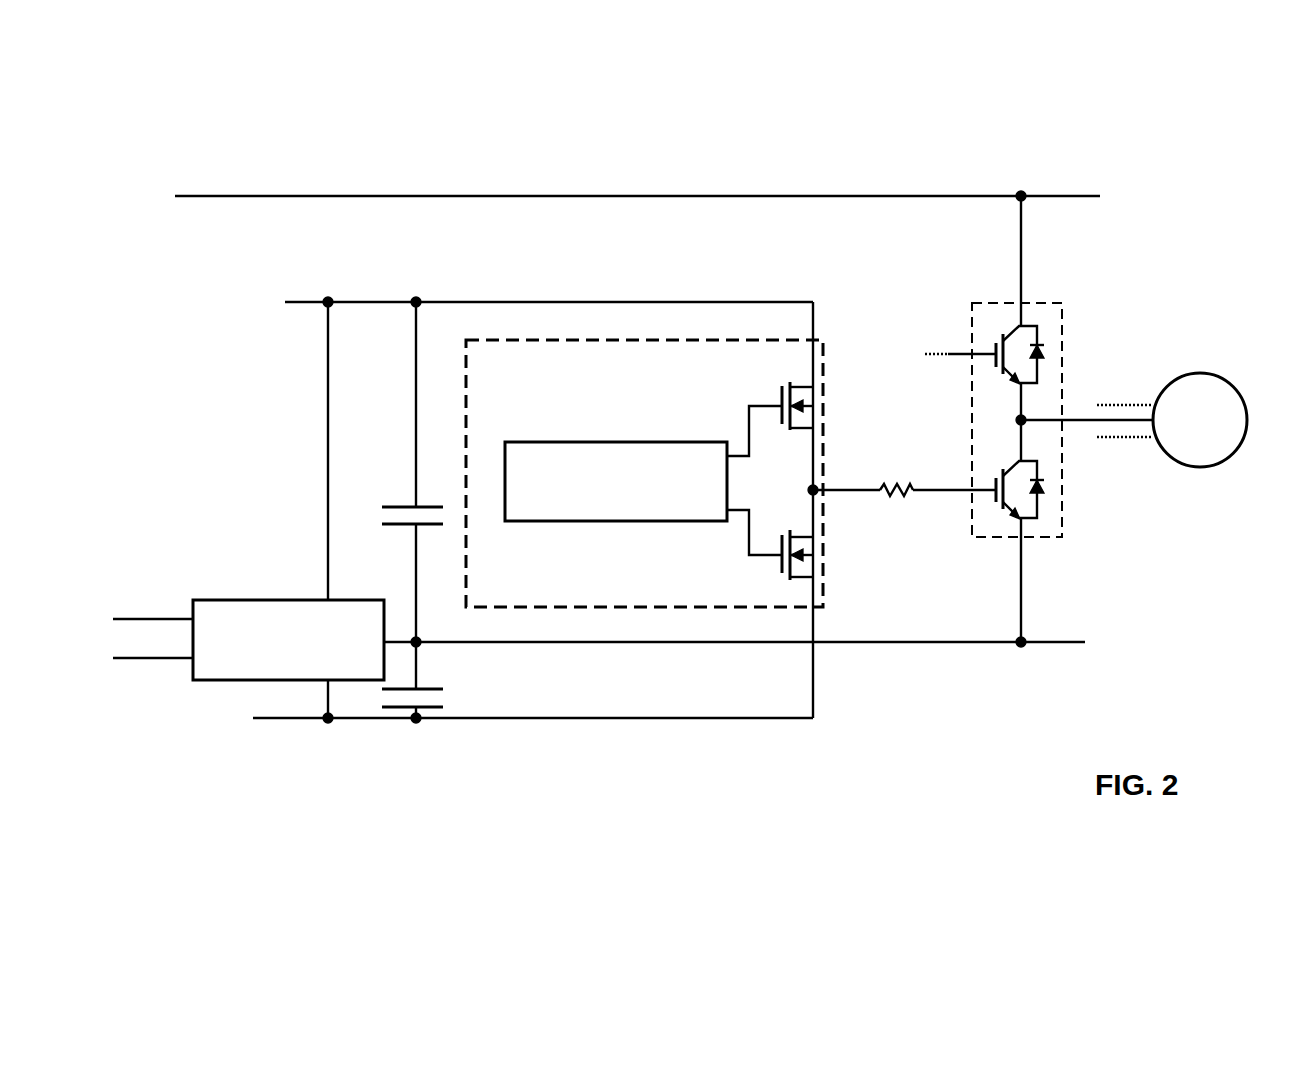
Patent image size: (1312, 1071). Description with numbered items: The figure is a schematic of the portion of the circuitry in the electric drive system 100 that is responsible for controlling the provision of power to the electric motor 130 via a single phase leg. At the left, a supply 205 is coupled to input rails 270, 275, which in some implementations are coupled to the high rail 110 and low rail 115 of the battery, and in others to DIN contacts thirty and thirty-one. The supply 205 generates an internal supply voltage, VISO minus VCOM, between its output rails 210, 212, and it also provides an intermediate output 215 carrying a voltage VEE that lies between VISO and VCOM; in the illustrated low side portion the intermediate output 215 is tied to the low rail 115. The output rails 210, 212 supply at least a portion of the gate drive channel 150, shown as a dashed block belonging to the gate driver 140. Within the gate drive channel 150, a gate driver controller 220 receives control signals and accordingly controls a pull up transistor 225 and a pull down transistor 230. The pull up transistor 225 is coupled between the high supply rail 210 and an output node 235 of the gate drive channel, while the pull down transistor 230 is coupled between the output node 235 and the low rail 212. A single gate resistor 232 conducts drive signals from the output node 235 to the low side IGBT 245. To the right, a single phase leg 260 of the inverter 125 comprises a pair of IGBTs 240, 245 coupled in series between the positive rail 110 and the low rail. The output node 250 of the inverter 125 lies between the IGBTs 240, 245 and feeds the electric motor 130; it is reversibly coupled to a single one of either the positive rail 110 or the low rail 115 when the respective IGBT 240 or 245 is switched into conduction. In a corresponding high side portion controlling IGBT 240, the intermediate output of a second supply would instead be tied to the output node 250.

The electric drive system 100 is at (1165, 264).
The high rail 110 is at (885, 194).
The low rail 115 is at (972, 645).
The inverter 125 is at (971, 396).
The electric motor 130 is at (1241, 395).
The gate driver 140 is at (841, 354).
The gate drive channel 150 is at (540, 407).
The supply 205 is at (240, 600).
The output rail (VISO) 210 is at (476, 298).
The output rail (VCOM) 212 is at (500, 725).
The intermediate output 215 is at (548, 647).
The gate driver controller 220 is at (545, 522).
The pull up transistor 225 is at (826, 396).
The pull down transistor 230 is at (822, 563).
The gate resistor 232 is at (910, 505).
The output node 235 is at (815, 488).
The IGBT 240 is at (1038, 338).
The IGBT 245 is at (1045, 510).
The output node 250 is at (1025, 423).
The phase leg 260 is at (960, 301).
The input rail 270 is at (142, 619).
The input rail 275 is at (140, 658).